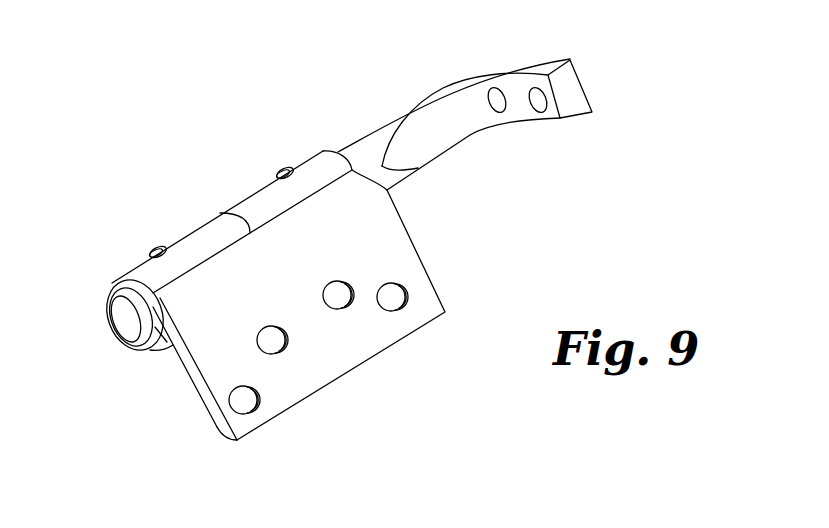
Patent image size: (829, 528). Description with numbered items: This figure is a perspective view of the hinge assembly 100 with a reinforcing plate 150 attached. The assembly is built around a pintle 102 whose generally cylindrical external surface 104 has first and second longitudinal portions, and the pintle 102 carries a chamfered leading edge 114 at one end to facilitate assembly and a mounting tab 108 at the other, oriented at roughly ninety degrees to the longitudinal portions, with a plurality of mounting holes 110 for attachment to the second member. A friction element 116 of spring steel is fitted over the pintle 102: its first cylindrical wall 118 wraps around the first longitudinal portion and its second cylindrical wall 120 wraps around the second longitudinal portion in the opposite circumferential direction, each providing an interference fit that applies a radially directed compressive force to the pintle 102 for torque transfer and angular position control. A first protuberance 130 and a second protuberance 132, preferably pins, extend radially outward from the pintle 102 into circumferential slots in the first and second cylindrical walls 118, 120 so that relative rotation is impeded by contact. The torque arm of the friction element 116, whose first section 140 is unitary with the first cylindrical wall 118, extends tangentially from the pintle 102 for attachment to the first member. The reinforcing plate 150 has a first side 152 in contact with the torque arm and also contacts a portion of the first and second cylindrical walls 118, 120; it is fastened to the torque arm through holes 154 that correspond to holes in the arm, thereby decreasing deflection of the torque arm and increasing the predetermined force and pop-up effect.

The hinge assembly 100 is at (163, 172).
The pintle 102 is at (370, 115).
The external surface 104 is at (150, 338).
The mounting tab 108 is at (592, 112).
The mounting holes 110 is at (502, 112).
The chamfered leading edge 114 is at (108, 292).
The friction element 116 is at (199, 212).
The first cylindrical wall 118 is at (135, 266).
The second cylindrical wall 120 is at (322, 150).
The first protuberance 130 is at (156, 247).
The second protuberance 132 is at (284, 168).
The first section 140 is at (203, 420).
The reinforcing plate 150 is at (438, 263).
The first side 152 is at (217, 447).
The holes 154 is at (258, 392).